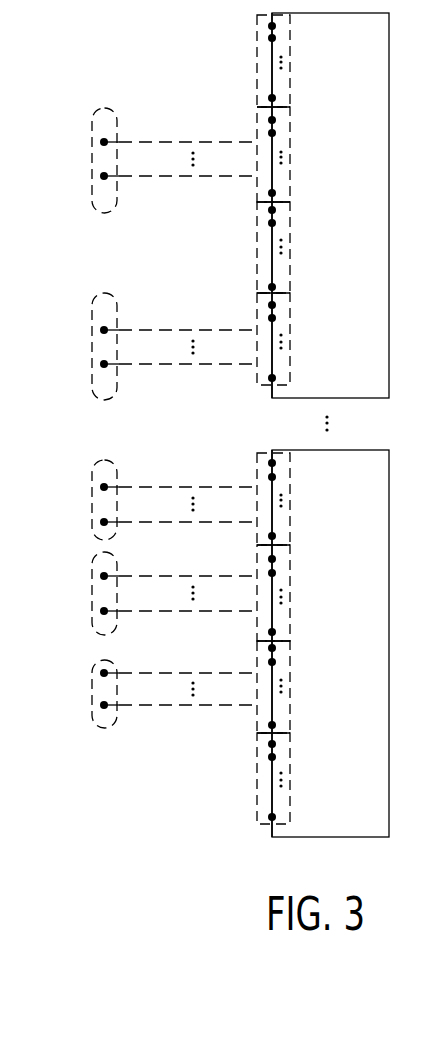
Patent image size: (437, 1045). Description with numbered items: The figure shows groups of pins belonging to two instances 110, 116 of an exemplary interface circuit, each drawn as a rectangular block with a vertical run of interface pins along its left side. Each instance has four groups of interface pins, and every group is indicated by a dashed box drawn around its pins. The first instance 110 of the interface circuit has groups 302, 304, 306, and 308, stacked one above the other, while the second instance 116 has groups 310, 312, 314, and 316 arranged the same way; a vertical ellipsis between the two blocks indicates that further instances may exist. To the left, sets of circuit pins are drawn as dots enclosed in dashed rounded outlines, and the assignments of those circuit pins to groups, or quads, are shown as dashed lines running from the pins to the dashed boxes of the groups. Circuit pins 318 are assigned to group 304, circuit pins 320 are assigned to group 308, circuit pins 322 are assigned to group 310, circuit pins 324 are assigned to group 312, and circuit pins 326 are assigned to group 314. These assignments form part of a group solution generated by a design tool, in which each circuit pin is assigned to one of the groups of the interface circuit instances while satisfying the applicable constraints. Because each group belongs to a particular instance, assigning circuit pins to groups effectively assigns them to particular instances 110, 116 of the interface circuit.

The instance of the interface circuit 110 is at (323, 205).
The instance of the interface circuit 116 is at (323, 643).
The group 302 is at (290, 62).
The group 304 is at (290, 129).
The group 306 is at (290, 280).
The group 308 is at (290, 339).
The group 310 is at (290, 506).
The group 312 is at (290, 567).
The group 314 is at (290, 717).
The group 316 is at (290, 777).
The circuit pins 318 is at (92, 160).
The circuit pins 320 is at (92, 348).
The circuit pins 322 is at (92, 505).
The circuit pins 324 is at (92, 590).
The circuit pins 326 is at (92, 691).